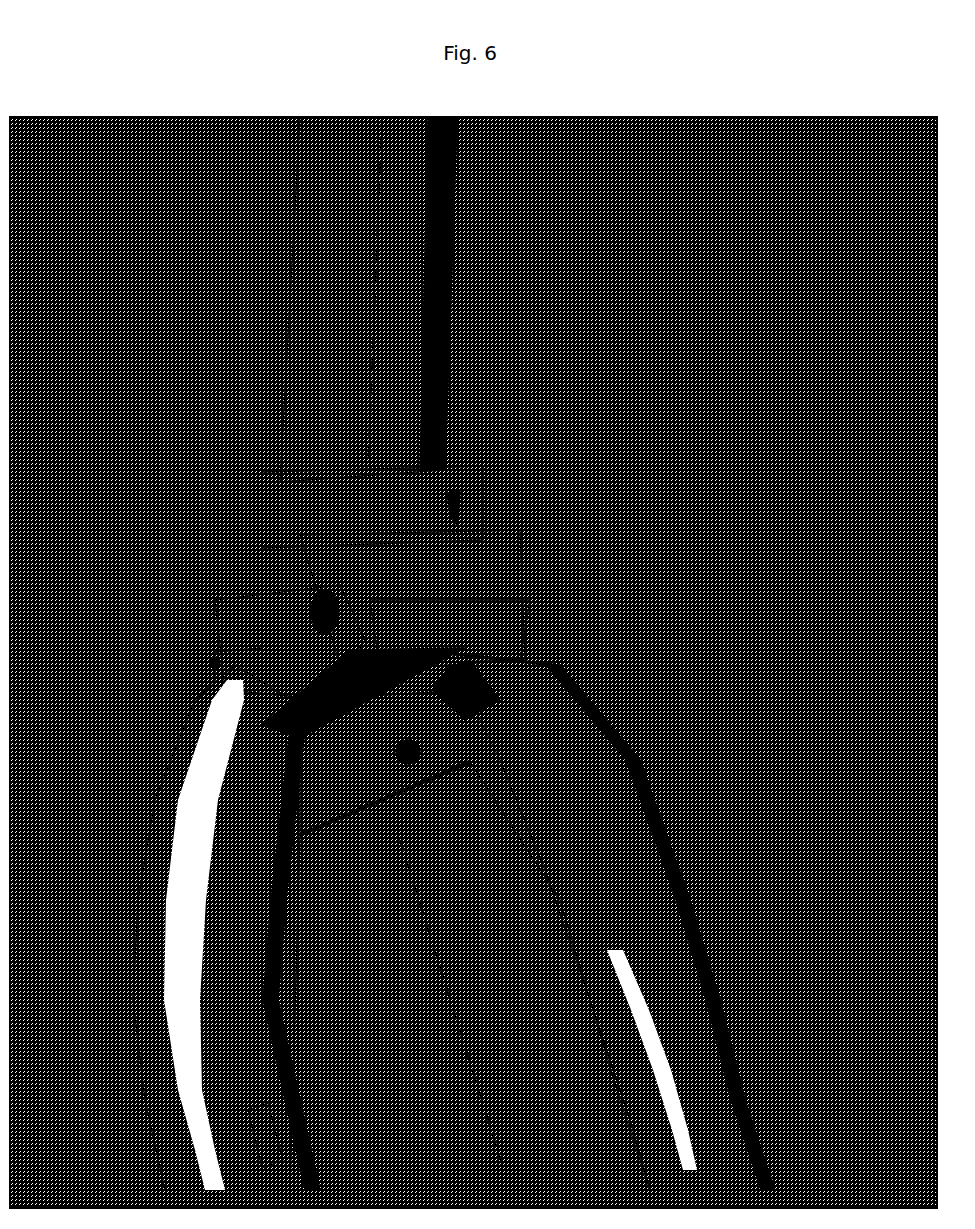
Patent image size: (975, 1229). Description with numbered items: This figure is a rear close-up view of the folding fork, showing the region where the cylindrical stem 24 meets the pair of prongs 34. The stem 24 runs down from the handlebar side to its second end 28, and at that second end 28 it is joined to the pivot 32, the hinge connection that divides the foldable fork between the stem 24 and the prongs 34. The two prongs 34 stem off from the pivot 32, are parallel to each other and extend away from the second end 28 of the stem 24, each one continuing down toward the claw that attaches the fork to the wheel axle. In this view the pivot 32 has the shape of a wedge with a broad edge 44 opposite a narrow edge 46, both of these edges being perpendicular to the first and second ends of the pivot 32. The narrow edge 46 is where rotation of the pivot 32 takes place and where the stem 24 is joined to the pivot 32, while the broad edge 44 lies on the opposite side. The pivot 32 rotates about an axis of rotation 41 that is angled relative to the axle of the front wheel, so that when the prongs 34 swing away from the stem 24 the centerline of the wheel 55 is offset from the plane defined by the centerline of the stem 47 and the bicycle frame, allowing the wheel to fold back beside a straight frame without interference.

The stem 24 is at (320, 228).
The centerline of the stem 47 is at (370, 320).
The second end of the stem 28 is at (440, 500).
The pivot 32 is at (380, 587).
The narrow edge of the pivot 46 is at (430, 606).
The axis of rotation of the pivot 41 is at (240, 600).
The broad edge of the pivot 44 is at (215, 662).
The centerline of the wheel 55 is at (423, 910).
The prongs 34 is at (205, 1052).